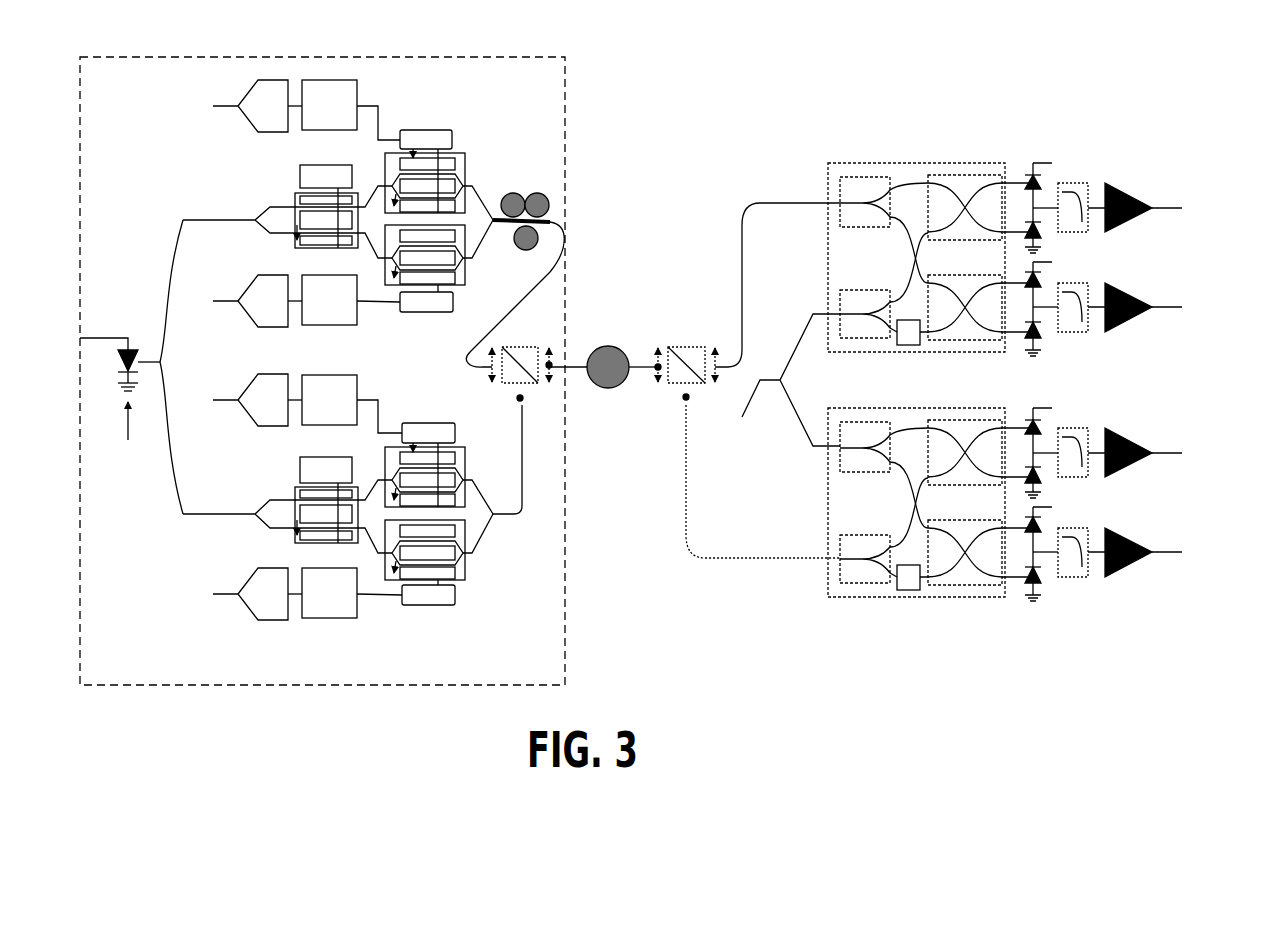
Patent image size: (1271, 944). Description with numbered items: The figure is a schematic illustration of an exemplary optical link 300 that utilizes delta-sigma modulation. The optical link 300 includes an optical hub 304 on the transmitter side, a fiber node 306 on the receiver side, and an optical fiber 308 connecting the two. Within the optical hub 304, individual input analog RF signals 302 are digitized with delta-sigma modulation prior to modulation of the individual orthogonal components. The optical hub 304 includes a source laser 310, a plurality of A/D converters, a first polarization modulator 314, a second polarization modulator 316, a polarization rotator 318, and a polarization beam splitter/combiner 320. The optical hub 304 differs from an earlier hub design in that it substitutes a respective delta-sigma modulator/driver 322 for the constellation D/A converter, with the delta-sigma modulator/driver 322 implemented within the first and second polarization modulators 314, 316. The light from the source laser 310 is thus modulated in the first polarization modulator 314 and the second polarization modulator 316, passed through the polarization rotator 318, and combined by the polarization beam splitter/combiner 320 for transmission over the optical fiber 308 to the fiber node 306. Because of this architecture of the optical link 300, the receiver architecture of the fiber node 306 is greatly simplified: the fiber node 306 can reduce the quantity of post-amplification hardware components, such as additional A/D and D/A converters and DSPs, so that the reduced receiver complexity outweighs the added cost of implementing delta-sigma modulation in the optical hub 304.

The optical link 300 is at (770, 84).
The input analog RF signals 302 is at (235, 355).
The optical hub 304 is at (551, 676).
The fiber node 306 is at (667, 663).
The optical fiber 308 is at (606, 393).
The source laser 310 is at (120, 386).
The first polarization modulator 314 is at (471, 140).
The second polarization modulator 316 is at (473, 563).
The polarization rotator 318 is at (520, 193).
The polarization beam splitter/combiner 320 is at (528, 346).
The delta-sigma modulator/driver 322 is at (381, 112).